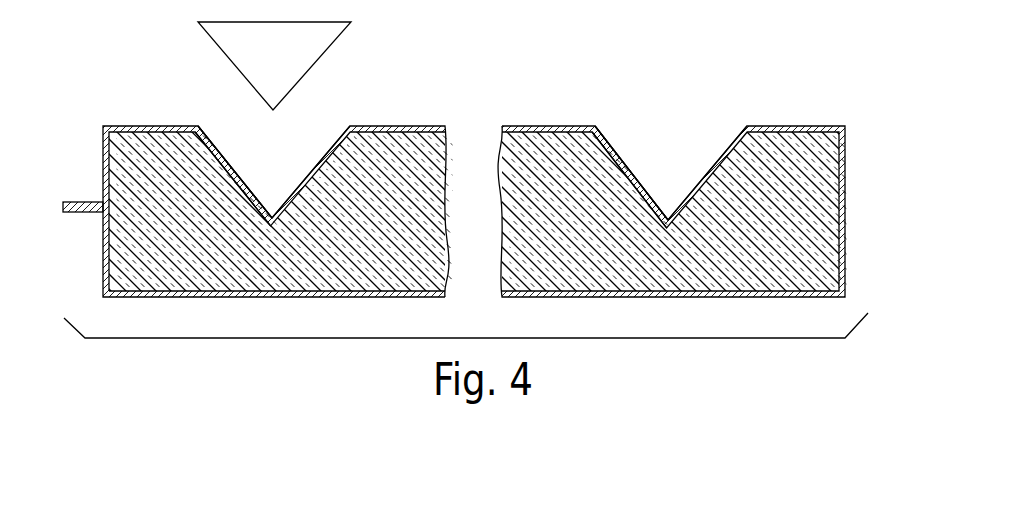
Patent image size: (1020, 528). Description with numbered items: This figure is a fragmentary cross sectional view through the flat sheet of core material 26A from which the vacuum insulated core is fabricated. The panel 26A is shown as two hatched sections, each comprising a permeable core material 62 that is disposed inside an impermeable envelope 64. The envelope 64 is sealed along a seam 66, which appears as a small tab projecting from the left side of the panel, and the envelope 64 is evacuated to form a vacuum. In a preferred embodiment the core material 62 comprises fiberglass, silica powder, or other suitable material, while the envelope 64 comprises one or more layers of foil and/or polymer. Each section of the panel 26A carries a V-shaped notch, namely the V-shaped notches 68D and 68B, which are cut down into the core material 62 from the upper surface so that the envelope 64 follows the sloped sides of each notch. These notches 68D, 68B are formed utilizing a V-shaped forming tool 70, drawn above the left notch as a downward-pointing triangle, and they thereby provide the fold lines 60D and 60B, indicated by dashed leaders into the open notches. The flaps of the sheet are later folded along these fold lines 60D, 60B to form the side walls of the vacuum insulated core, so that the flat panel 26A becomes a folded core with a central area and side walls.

The flat sheet of core material 26A is at (799, 121).
The fold line 60B is at (672, 172).
The fold line 60D is at (283, 152).
The permeable core material 62 is at (800, 191).
The impermeable envelope 64 is at (845, 261).
The seam 66 is at (87, 200).
The V-shaped notch 68B is at (597, 120).
The V-shaped notch 68D is at (219, 156).
The V-shaped forming tool 70 is at (231, 62).